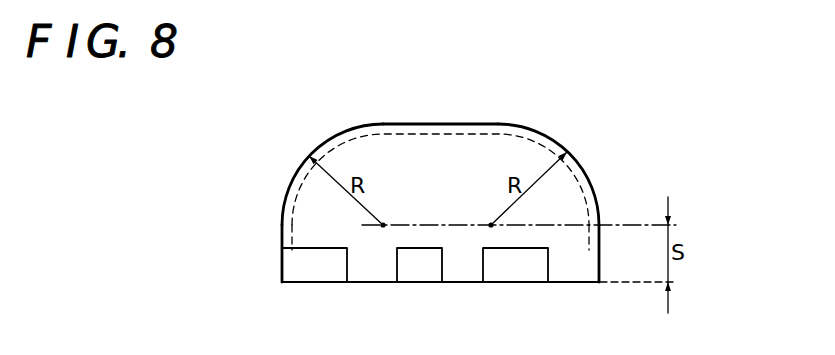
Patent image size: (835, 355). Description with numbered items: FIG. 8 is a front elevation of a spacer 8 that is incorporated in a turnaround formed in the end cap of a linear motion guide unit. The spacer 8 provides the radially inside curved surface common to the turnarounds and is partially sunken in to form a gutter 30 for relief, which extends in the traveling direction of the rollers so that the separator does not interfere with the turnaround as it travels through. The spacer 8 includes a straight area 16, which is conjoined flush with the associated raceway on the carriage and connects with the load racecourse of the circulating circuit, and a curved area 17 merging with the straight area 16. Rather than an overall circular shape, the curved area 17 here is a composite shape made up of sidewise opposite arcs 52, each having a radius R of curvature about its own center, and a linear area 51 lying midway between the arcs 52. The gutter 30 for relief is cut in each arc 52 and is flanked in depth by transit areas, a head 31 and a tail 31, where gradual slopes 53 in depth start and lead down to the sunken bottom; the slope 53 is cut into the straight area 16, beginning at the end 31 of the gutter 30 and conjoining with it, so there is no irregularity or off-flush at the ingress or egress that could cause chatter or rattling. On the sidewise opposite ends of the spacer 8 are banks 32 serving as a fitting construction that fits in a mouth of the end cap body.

The spacer 8 is at (605, 187).
The straight area 16 is at (283, 248).
The curved area 17 is at (310, 156).
The gutter for relief 30 is at (520, 133).
The head and tail of the gutter 31 is at (282, 268).
The banks 32 is at (352, 128).
The linear area 51 is at (477, 124).
The arcs 52 is at (309, 154).
The slopes 53 is at (287, 242).